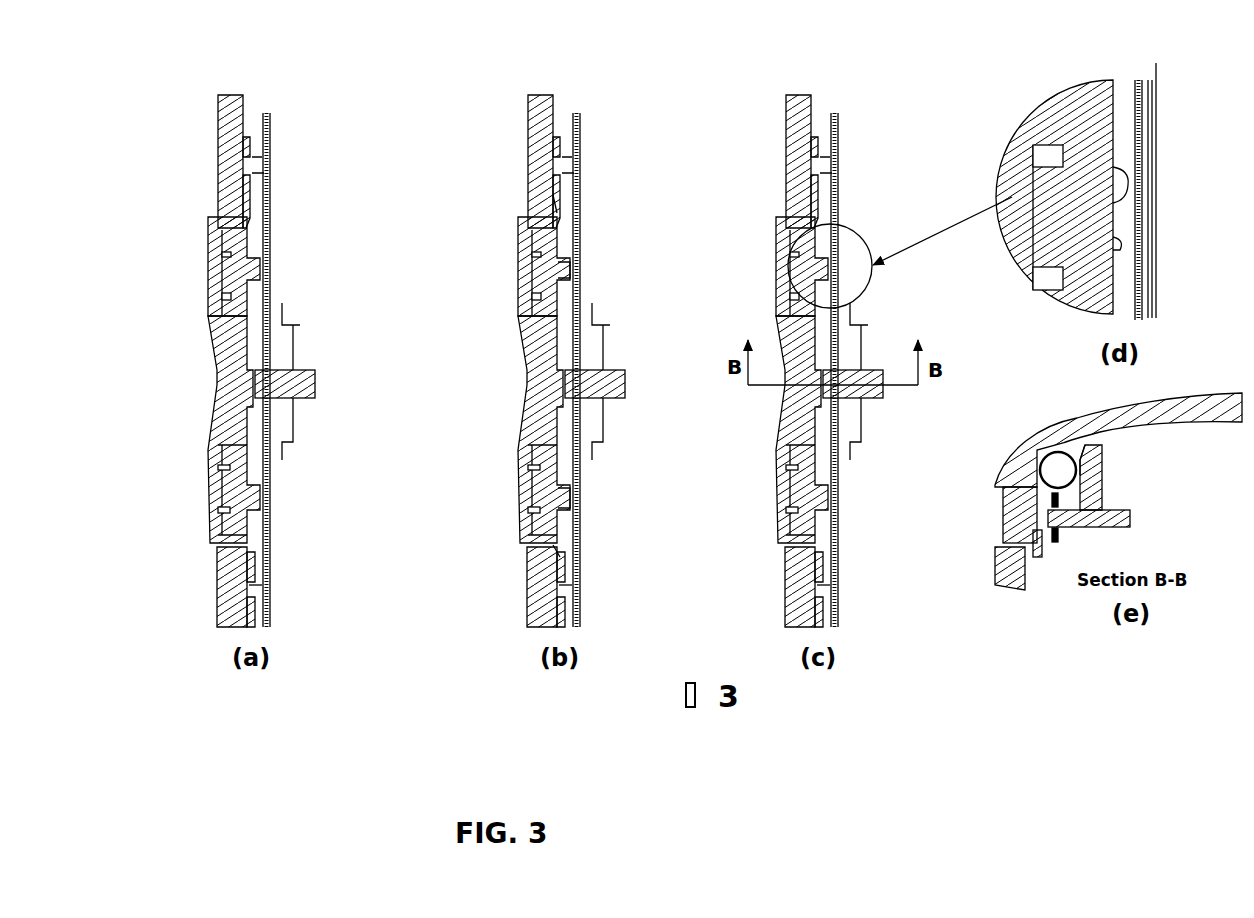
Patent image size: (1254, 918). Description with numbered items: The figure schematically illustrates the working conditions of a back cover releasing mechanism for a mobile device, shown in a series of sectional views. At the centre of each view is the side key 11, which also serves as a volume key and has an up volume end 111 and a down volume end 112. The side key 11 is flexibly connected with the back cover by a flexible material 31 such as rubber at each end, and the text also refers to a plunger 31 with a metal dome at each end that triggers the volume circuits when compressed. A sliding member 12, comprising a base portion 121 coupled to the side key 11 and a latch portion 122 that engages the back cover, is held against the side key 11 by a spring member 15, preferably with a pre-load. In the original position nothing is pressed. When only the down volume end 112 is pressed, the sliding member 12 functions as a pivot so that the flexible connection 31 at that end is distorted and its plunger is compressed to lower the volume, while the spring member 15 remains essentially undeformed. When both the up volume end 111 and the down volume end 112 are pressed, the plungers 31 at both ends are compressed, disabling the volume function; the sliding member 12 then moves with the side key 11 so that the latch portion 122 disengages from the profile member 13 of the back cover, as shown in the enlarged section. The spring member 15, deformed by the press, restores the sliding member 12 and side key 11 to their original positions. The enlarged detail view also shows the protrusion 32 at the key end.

The side key 11 is at (679, 382).
The up volume end 111 is at (203, 225).
The down volume end 112 is at (202, 535).
The sliding member 12 is at (290, 392).
The base portion 121 is at (1098, 520).
The latch portion 122 is at (1092, 460).
The profile member 13 is at (1047, 457).
The spring member 15 is at (298, 324).
The flexible material 31 is at (553, 207).
The protrusion 32 is at (560, 270).